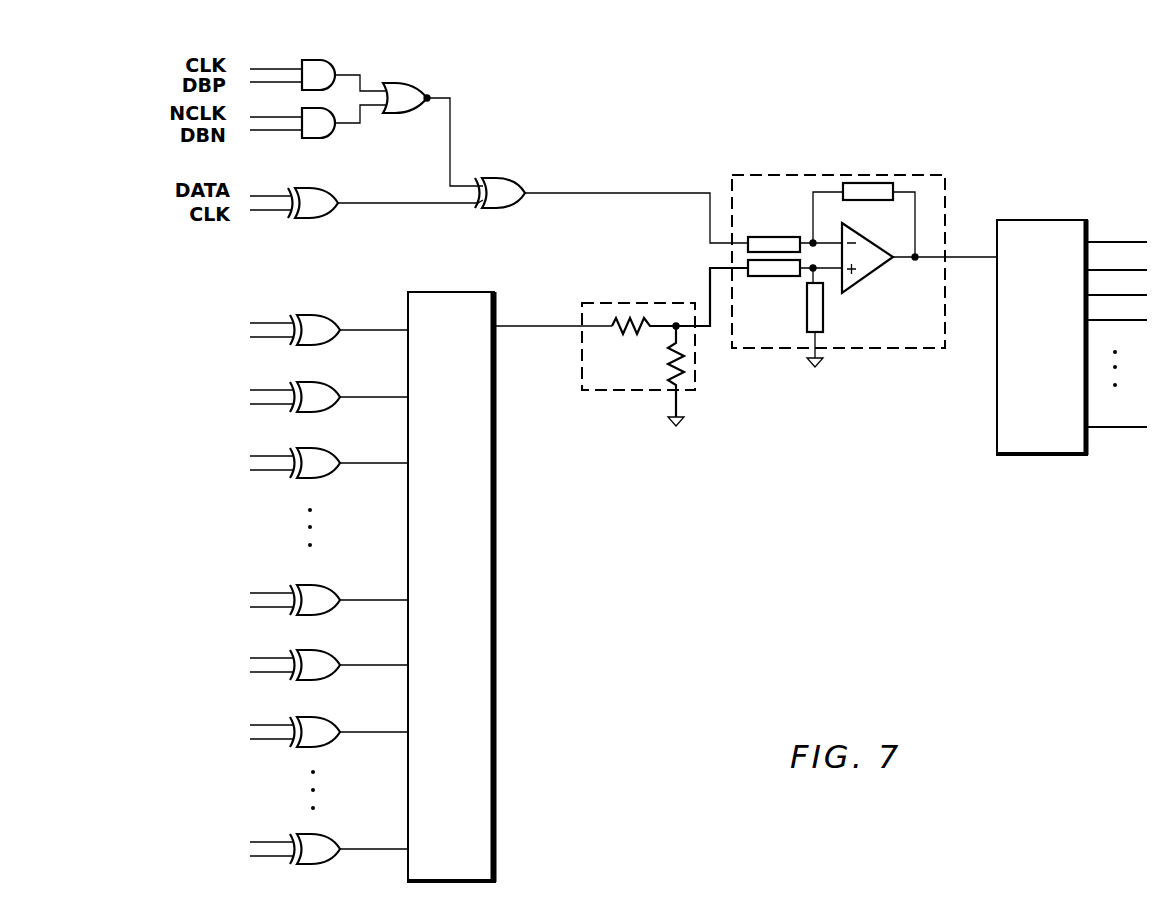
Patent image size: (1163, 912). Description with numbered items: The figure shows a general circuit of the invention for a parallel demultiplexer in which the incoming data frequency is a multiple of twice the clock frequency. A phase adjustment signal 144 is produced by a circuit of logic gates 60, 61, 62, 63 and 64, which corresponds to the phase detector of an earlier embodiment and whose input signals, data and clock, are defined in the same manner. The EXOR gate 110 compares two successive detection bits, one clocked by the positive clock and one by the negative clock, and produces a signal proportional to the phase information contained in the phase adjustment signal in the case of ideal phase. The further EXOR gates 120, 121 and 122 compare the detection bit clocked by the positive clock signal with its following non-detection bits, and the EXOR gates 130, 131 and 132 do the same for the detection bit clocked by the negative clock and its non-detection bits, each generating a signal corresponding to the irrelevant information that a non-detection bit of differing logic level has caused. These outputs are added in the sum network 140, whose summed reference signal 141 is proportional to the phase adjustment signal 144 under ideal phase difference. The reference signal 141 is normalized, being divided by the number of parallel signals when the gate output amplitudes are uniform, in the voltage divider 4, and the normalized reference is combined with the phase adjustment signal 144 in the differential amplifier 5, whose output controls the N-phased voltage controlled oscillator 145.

The voltage divider 4 is at (643, 392).
The differential amplifier 5 is at (775, 177).
The exclusive-OR gate 60 is at (333, 220).
The AND gate 61 is at (332, 139).
The AND gate 62 is at (310, 61).
The OR gate 63 is at (405, 85).
The exclusive-OR gate 64 is at (510, 181).
The EXOR gate 110 is at (326, 316).
The EXOR gate 120 is at (326, 383).
The EXOR gate 121 is at (326, 449).
The EXOR gate 122 is at (326, 586).
The EXOR gate 130 is at (326, 651).
The EXOR gate 131 is at (326, 718).
The EXOR gate 132 is at (326, 835).
The sum network 140 is at (497, 578).
The reference signal 141 is at (541, 327).
The phase adjustment signal 144 is at (606, 193).
The N-phased voltage controlled oscillator 145 is at (1047, 457).